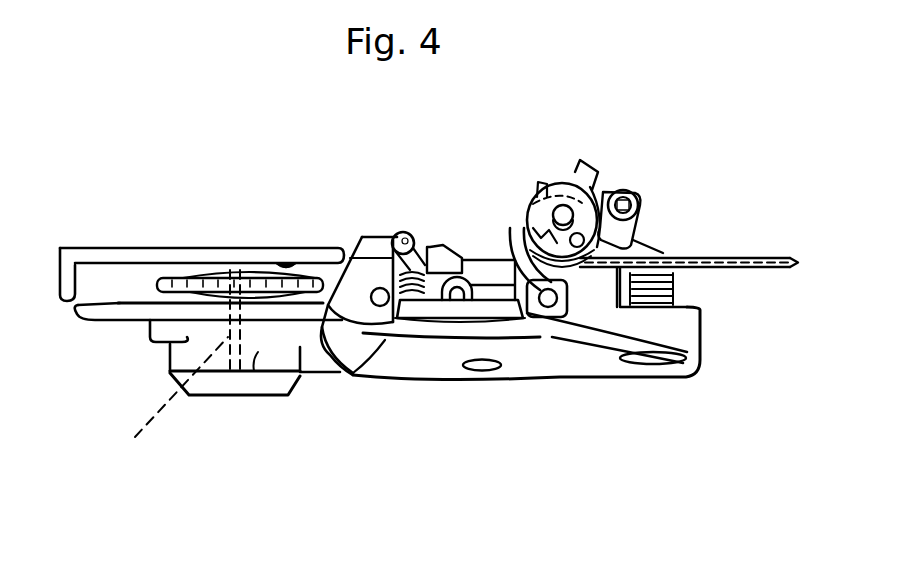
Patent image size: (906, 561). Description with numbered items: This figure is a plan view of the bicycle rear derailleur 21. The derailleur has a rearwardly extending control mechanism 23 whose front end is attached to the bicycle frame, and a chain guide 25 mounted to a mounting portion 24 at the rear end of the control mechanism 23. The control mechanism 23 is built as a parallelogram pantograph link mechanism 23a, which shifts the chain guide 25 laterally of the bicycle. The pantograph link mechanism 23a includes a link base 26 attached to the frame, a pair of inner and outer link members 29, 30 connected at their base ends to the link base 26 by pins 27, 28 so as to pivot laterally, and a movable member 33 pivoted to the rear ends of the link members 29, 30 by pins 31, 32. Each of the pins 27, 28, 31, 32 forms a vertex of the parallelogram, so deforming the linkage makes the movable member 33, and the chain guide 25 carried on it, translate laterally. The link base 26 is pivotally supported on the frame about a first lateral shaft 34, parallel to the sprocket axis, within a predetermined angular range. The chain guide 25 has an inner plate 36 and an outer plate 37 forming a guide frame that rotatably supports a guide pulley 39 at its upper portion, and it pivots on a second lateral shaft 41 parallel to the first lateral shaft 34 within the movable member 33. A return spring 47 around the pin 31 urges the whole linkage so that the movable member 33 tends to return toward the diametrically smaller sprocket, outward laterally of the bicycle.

The bicycle rear derailleur 21 is at (477, 392).
The control mechanism 23 is at (416, 390).
The parallelogram pantograph link mechanism 23a is at (386, 382).
The mounting portion 24 is at (240, 378).
The chain guide 25 is at (217, 240).
The link base 26 is at (597, 364).
The pin 27 is at (592, 170).
The pin 28 is at (548, 307).
The inner link member 29 is at (486, 272).
The outer link member 30 is at (450, 365).
The pin 31 is at (403, 232).
The pin 32 is at (378, 307).
The movable member 33 is at (284, 374).
The first lateral shaft 34 is at (689, 270).
The inner plate 36 is at (160, 247).
The outer plate 37 is at (107, 327).
The guide pulley 39 is at (272, 282).
The second lateral shaft 41 is at (165, 398).
The return spring 47 is at (436, 268).